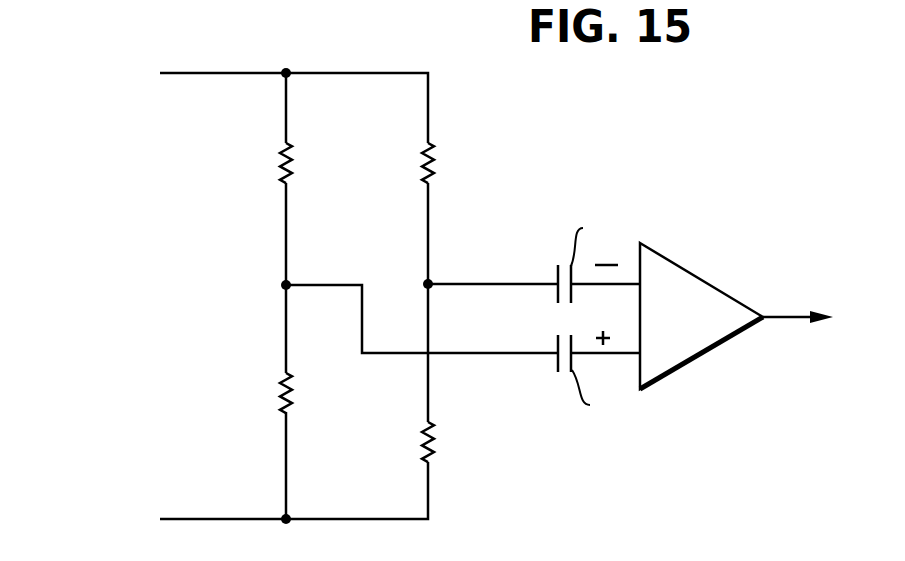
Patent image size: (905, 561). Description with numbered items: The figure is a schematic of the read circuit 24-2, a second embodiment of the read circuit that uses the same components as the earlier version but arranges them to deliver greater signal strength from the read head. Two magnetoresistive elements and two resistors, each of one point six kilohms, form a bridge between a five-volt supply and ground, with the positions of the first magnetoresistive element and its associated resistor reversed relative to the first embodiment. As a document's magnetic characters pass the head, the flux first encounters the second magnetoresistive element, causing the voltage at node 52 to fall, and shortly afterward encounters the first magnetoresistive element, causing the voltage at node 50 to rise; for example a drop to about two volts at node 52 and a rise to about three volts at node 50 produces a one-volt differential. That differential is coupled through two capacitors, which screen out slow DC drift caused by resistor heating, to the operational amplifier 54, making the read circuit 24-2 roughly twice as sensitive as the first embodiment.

The read circuit 24-2 is at (110, 276).
The node 50 is at (282, 289).
The node 52 is at (430, 282).
The operational amplifier 54 is at (676, 263).